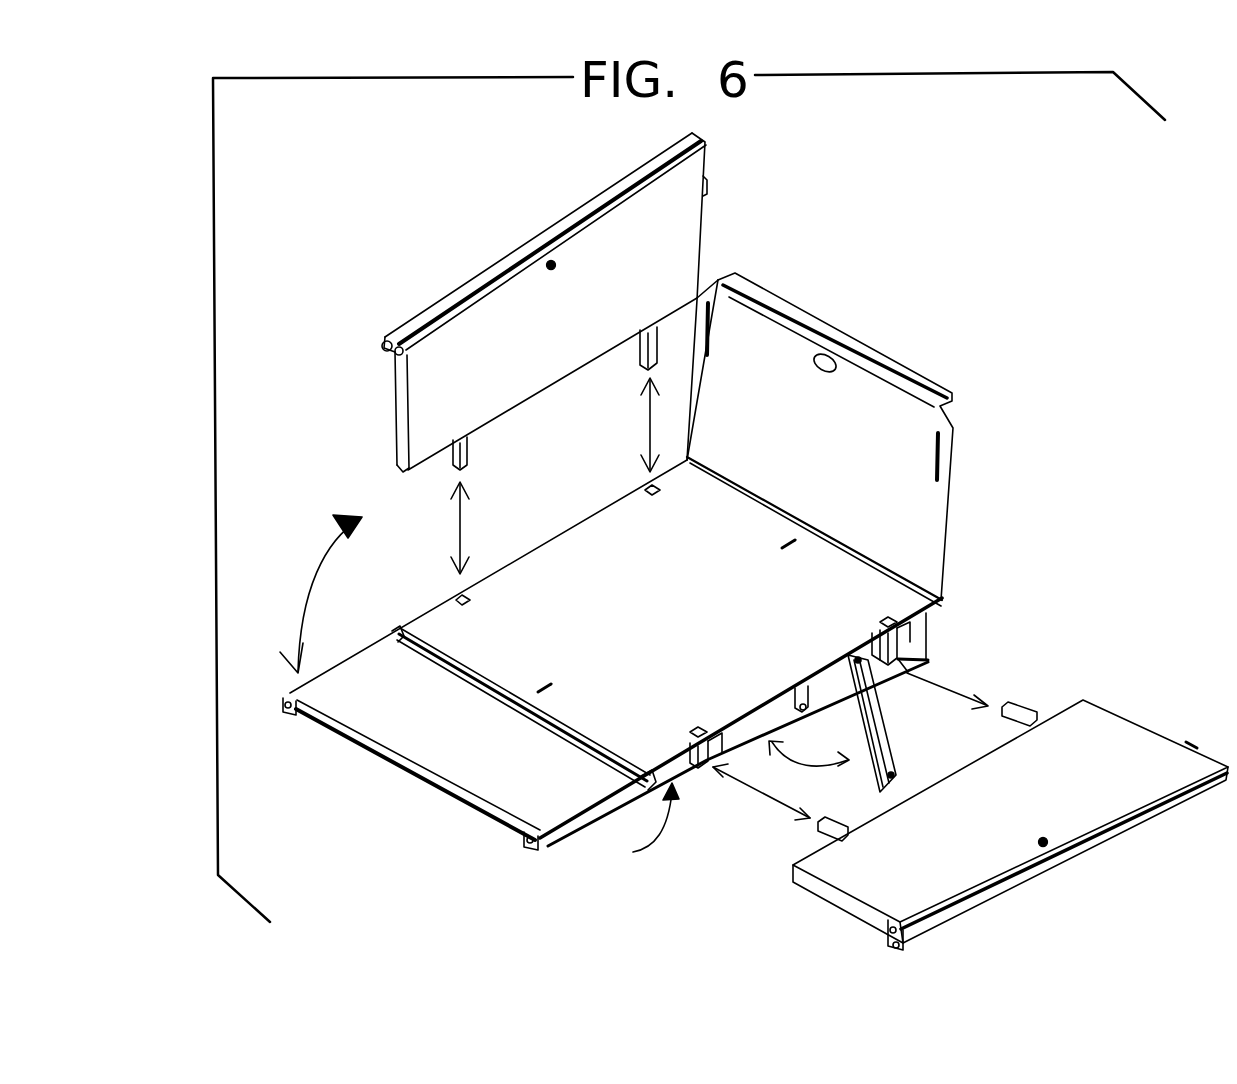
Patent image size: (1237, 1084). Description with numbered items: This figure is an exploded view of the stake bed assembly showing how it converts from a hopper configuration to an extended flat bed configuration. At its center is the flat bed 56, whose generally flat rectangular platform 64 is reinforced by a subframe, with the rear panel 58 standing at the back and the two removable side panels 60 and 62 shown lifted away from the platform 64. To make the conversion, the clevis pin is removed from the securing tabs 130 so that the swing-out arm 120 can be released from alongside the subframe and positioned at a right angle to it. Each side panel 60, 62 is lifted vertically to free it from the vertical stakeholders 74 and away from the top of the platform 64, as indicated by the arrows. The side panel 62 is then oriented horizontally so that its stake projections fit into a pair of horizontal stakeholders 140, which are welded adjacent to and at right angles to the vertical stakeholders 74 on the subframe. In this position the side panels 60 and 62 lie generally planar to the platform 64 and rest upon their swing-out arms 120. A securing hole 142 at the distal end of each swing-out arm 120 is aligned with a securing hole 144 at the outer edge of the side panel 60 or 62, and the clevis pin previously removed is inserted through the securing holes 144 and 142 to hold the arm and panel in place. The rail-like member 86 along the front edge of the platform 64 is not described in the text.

The flat bed 56 is at (635, 827).
The rear panel 58 is at (832, 440).
The side panel 60 is at (644, 280).
The side panel 62 is at (1059, 797).
The platform 64 is at (669, 583).
The vertical stakeholders 74 is at (722, 740).
The front rail 86 is at (437, 762).
The swing-out arm 120 is at (878, 693).
The securing tabs 130 is at (795, 703).
The horizontal stakeholders 140 is at (690, 767).
The securing hole 142 is at (898, 760).
The securing hole 144 is at (551, 262).